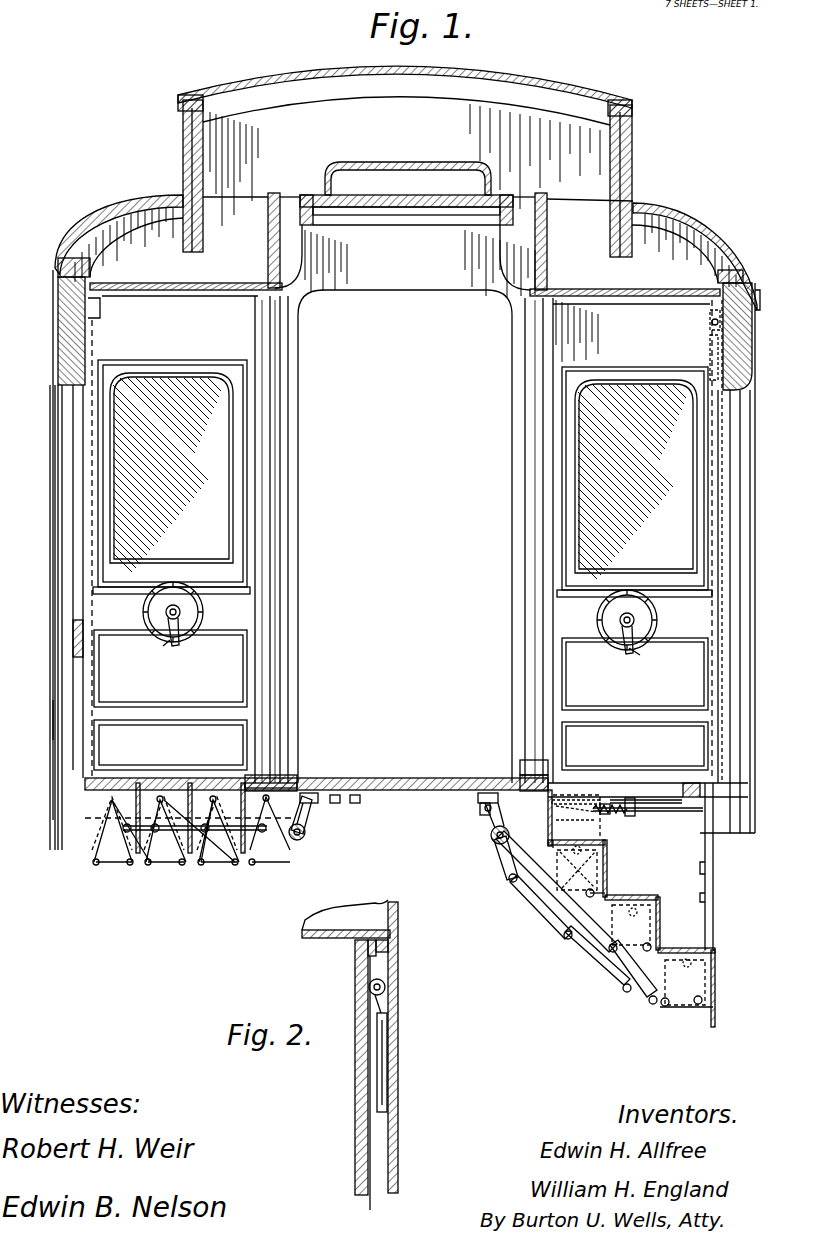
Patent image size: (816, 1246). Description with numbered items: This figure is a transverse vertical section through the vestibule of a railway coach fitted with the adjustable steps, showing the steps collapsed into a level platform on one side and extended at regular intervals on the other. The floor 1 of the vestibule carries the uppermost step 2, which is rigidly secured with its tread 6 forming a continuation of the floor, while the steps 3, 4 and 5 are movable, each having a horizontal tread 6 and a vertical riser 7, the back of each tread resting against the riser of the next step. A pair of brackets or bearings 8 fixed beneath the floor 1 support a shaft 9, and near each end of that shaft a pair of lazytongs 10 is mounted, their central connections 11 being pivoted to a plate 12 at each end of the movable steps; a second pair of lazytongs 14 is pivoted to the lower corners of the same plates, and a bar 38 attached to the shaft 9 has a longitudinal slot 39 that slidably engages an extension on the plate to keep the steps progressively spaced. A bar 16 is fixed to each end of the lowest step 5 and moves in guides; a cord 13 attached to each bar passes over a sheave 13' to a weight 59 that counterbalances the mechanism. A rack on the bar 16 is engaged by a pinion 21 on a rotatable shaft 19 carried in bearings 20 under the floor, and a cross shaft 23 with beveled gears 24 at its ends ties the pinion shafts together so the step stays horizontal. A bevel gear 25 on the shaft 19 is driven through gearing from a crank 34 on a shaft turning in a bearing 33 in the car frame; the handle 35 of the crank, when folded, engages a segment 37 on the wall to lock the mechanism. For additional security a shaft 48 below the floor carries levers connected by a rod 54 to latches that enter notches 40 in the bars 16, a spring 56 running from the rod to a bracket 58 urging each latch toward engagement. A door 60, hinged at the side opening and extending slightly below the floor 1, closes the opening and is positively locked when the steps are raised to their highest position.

In FIG. 1, the floor 1 is at (402, 780).
In FIG. 1, the step 2 is at (556, 800).
In FIG. 1, the step 3 is at (205, 792).
In FIG. 1, the step 4 is at (152, 792).
In FIG. 1, the step 5 is at (100, 792).
In FIG. 1, the tread 6 is at (525, 780).
In FIG. 1, the riser 7 is at (570, 810).
In FIG. 1, the bracket or bearing 8 is at (316, 806).
In FIG. 1, the shaft 9 is at (302, 840).
In FIG. 1, the lazytongs 10 is at (178, 858).
In FIG. 1, the central connection 11 is at (100, 855).
In FIG. 1, the plate 12 is at (690, 1005).
In FIG. 1, the cord or flexible connection 13 is at (750, 541).
In FIG. 2, the cord or flexible connection 13 is at (337, 1067).
In FIG. 1, the sheave 13' is at (691, 322).
In FIG. 2, the sheave 13' is at (405, 982).
In FIG. 1, the second pair of lazytongs 14 is at (250, 858).
In FIG. 1, the bar 16 is at (714, 920).
In FIG. 1, the rotatable shaft 19 is at (660, 814).
In FIG. 1, the bearing 20 is at (628, 806).
In FIG. 1, the pinion 21 is at (720, 787).
In FIG. 1, the shaft 23 is at (480, 810).
In FIG. 1, the beveled gear 24 is at (486, 804).
In FIG. 1, the bevel gear 25 is at (606, 860).
In FIG. 1, the bearing 33 is at (181, 612).
In FIG. 1, the crank 34 is at (166, 642).
In FIG. 1, the handle 35 is at (178, 642).
In FIG. 1, the segment 37 is at (174, 582).
In FIG. 1, the bar 38 is at (293, 845).
In FIG. 1, the longitudinal slot 39 is at (215, 855).
In FIG. 1, the notches 40 is at (712, 868).
In FIG. 1, the shaft 48 is at (262, 778).
In FIG. 1, the rod 54 is at (665, 798).
In FIG. 1, the spring 56 is at (612, 814).
In FIG. 1, the bracket 58 is at (602, 814).
In FIG. 1, the weight 59 is at (758, 350).
In FIG. 2, the weight 59 is at (400, 1022).
In FIG. 1, the door 60 is at (75, 718).